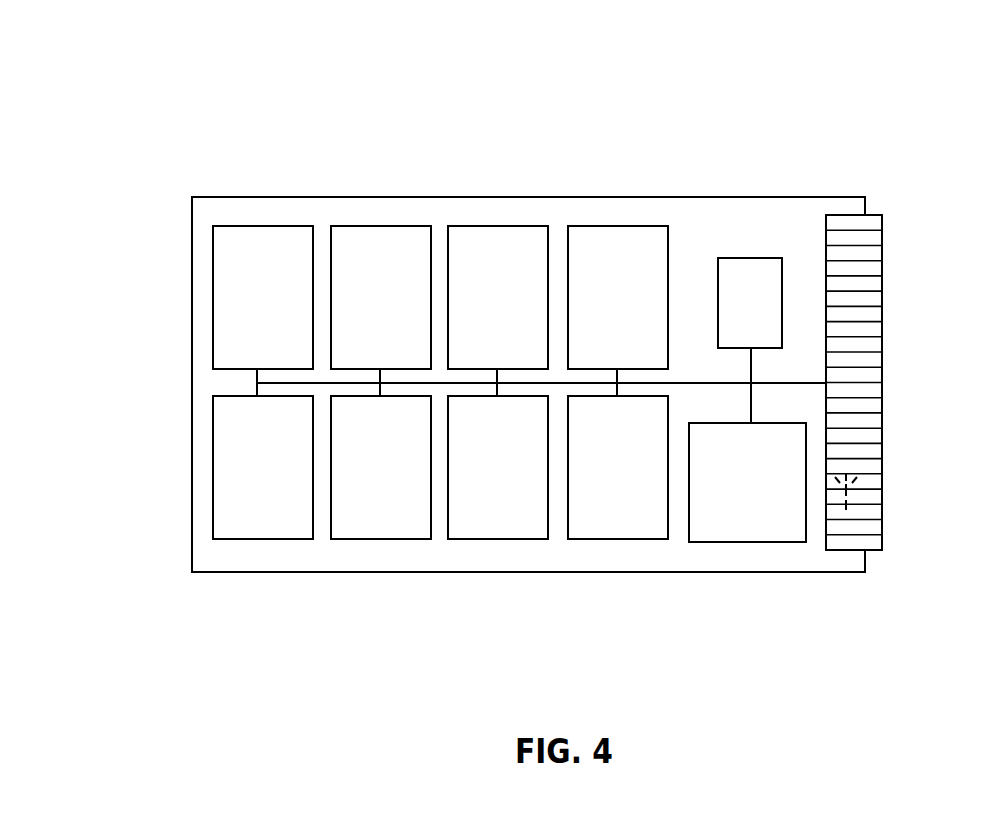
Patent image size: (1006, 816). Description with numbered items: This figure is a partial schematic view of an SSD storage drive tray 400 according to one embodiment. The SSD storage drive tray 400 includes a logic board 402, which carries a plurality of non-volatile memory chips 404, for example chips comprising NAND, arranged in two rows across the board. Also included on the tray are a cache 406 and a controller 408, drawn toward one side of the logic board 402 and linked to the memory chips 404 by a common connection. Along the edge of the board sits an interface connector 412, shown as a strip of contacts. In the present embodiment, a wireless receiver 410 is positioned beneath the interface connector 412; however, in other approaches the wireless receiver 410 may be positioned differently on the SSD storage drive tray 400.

The SSD storage drive tray 400 is at (108, 80).
The logic board 402 is at (166, 333).
The non-volatile memory chips 404 is at (262, 226).
The cache 406 is at (745, 258).
The controller 408 is at (728, 542).
The wireless receiver 410 is at (846, 486).
The interface connector 412 is at (882, 277).